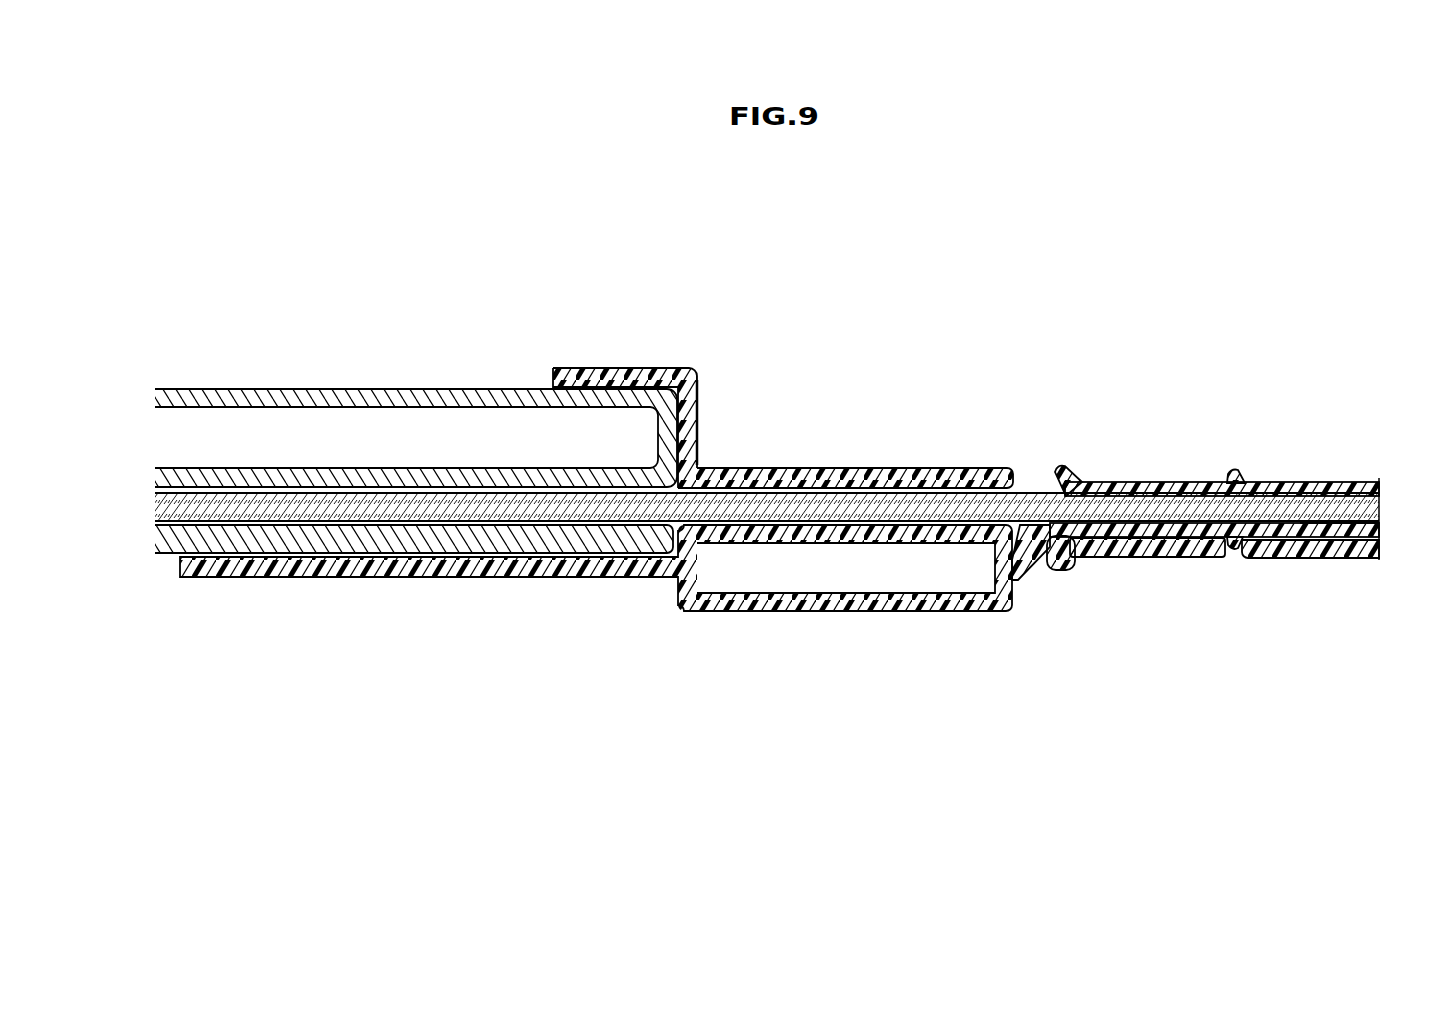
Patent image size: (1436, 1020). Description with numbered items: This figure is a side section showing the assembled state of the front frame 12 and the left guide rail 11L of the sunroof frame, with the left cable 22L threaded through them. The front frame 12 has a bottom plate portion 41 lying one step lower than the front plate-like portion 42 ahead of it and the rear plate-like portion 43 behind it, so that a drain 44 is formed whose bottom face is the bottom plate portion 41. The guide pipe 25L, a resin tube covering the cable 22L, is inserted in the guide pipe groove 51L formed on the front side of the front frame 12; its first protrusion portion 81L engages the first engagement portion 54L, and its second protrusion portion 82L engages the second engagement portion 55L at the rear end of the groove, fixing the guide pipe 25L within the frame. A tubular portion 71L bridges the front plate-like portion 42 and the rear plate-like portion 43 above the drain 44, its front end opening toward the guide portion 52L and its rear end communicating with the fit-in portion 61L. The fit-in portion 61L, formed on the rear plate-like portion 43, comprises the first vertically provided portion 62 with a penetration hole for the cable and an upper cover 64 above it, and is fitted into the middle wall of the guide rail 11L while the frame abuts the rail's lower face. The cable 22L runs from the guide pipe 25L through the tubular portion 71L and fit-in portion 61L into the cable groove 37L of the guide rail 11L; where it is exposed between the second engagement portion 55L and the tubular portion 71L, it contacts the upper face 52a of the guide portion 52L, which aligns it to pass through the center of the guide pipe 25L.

The guide rail 11L is at (333, 388).
The front frame 12 is at (807, 632).
The cable 22L is at (877, 496).
The guide pipe 25L is at (1211, 482).
The cable groove 37L is at (513, 524).
The bottom plate portion 41 is at (901, 622).
The front plate-like portion 42 is at (1139, 580).
The rear plate-like portion 43 is at (566, 589).
The drain 44 is at (763, 593).
The guide pipe groove 51L is at (1242, 587).
The guide portion 52L is at (1033, 569).
The upper face 52a is at (1048, 491).
The first engagement portion 54L is at (1248, 560).
The second engagement portion 55L is at (1056, 569).
The fit-in portion 61L is at (783, 392).
The first vertically provided portion 62 is at (700, 422).
The upper cover 64 is at (585, 368).
The tubular portion 71L is at (809, 470).
The first protrusion portion 81L is at (1233, 470).
The second protrusion portion 82L is at (1061, 468).